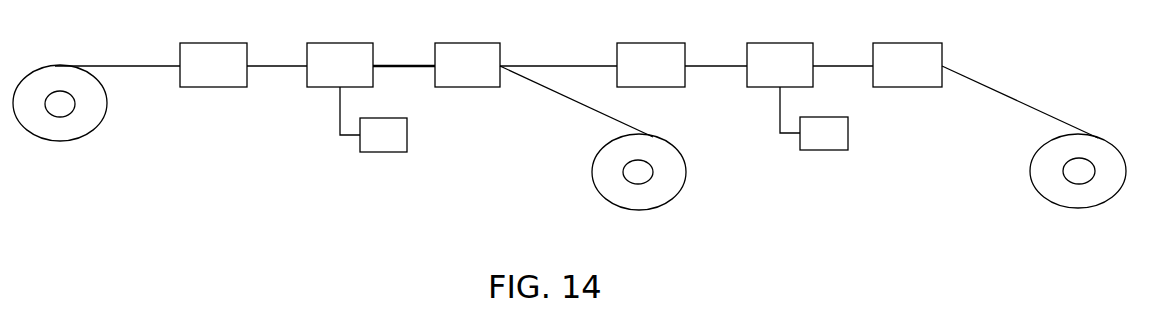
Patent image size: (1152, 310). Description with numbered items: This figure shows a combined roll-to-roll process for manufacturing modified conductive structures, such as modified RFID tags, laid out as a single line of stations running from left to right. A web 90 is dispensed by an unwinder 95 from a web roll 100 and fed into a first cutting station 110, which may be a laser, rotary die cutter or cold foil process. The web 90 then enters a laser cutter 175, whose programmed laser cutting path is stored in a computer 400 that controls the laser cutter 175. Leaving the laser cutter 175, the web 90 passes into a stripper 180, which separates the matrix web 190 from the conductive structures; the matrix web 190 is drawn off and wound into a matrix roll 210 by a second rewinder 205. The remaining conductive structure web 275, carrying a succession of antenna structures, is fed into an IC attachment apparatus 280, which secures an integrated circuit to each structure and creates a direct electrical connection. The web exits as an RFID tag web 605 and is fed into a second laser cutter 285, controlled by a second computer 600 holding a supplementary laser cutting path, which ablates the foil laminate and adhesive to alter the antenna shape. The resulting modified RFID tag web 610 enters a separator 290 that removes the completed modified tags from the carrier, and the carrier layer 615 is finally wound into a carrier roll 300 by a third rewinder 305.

The web 90 is at (138, 65).
The unwinder 95 is at (73, 107).
The web roll 100 is at (60, 141).
The first cutting station 110 is at (213, 43).
The laser cutter 175 is at (340, 46).
The stripper 180 is at (470, 43).
The matrix web 190 is at (597, 108).
The second rewinder 205 is at (622, 174).
The matrix roll 210 is at (637, 205).
The conductive structure web 275 is at (578, 65).
The IC attachment apparatus 280 is at (655, 43).
The second laser cutter 285 is at (783, 43).
The separator 290 is at (910, 43).
The carrier roll 300 is at (1077, 205).
The third rewinder 305 is at (1064, 171).
The computer 400 is at (407, 135).
The second computer 600 is at (848, 135).
The RFID tag web 605 is at (708, 67).
The modified RFID tag web 610 is at (852, 63).
The carrier layer 615 is at (1008, 92).